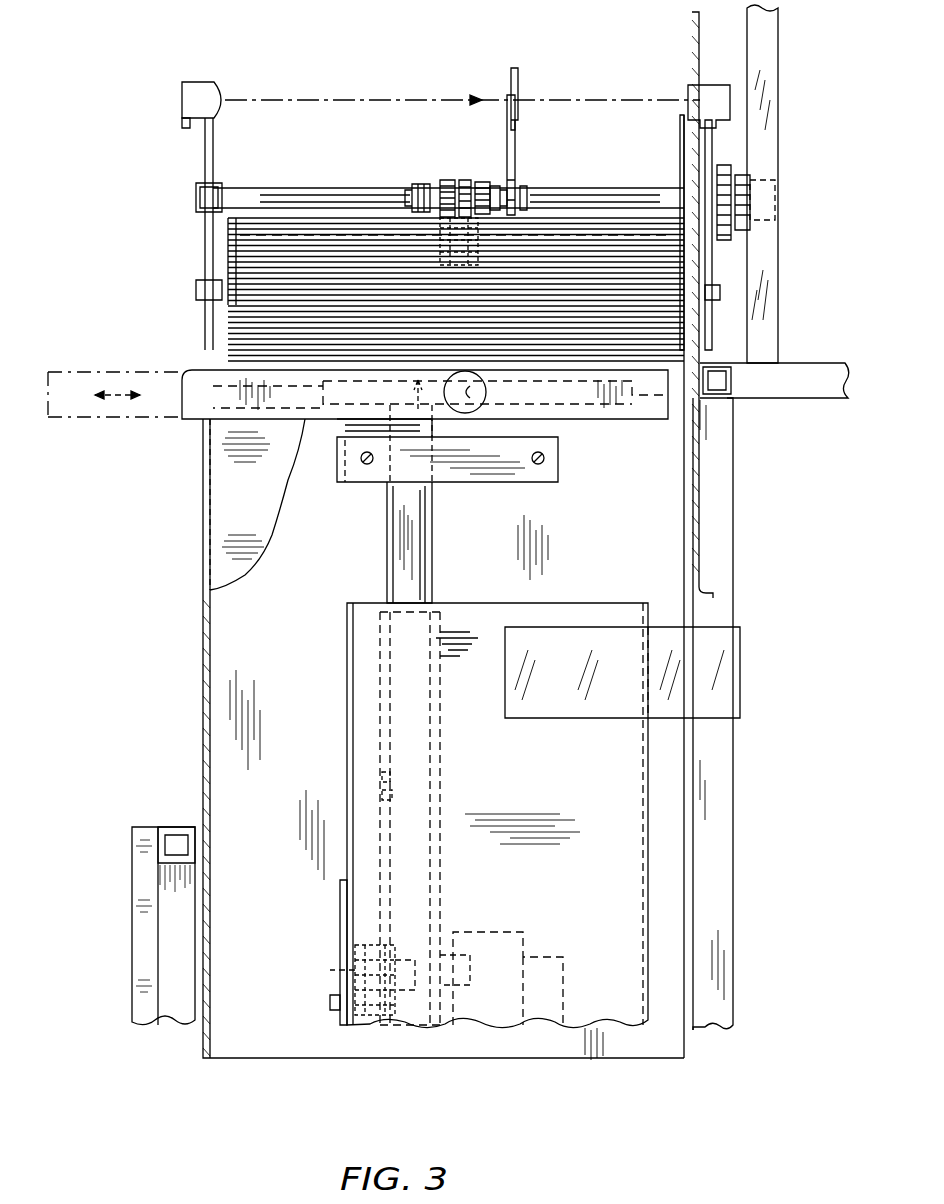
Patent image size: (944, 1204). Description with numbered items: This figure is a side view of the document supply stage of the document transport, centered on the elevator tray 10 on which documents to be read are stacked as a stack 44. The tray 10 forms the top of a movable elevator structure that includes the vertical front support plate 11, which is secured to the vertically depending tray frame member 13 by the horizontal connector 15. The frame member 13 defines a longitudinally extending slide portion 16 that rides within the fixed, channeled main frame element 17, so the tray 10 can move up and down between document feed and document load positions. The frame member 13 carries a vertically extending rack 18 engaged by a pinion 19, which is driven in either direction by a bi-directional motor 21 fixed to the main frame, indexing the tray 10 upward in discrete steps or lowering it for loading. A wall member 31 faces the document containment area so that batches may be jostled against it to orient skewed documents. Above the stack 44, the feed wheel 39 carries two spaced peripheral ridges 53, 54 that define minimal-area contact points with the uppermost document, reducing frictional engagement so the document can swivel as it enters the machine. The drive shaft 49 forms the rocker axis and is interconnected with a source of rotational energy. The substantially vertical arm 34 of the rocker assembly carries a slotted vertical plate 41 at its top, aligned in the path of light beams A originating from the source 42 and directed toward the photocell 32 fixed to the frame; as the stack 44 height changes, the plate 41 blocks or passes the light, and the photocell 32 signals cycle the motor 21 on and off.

The elevator tray 10 is at (200, 370).
The front support plate 11 is at (250, 521).
The tray frame member 13 is at (430, 512).
The horizontal connector 15 is at (540, 476).
The slide portion 16 is at (425, 550).
The main frame element 17 is at (380, 612).
The rack 18 is at (372, 830).
The pinion 19 is at (355, 975).
The motor 21 is at (520, 948).
The wall member 31 is at (680, 136).
The photocell 32 is at (714, 94).
The vertical arm 34 is at (514, 157).
The feed wheel 39 is at (462, 180).
The vertical plate 41 is at (516, 96).
The light source 42 is at (192, 90).
The document stack 44 is at (308, 250).
The drive shaft 49 is at (588, 205).
The ridge 53 is at (446, 180).
The ridge 54 is at (478, 182).
The light beam path A is at (345, 100).